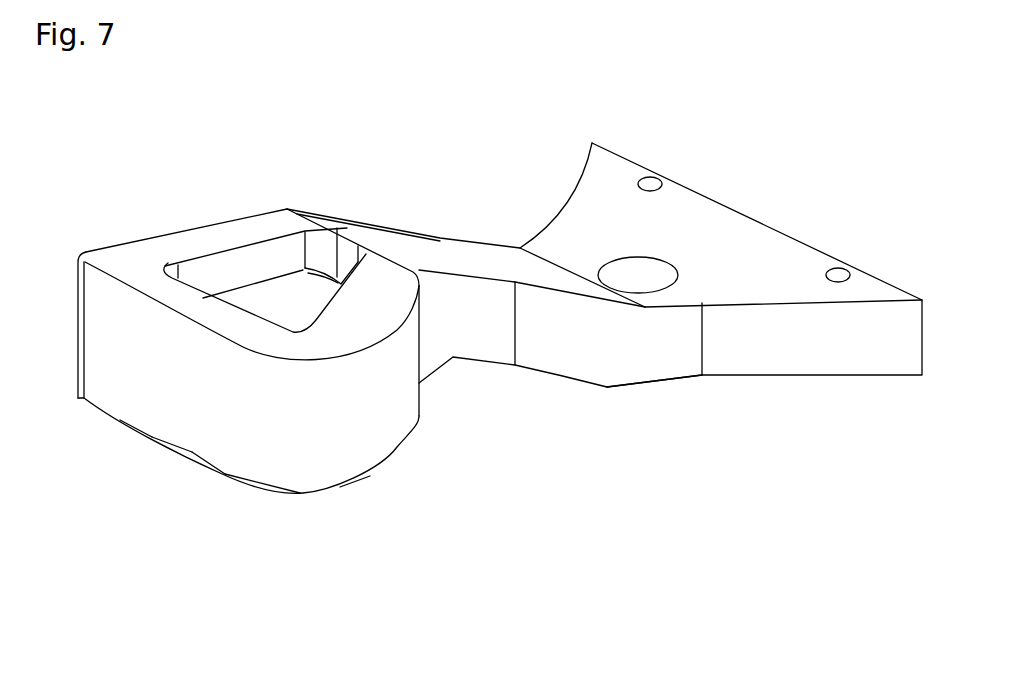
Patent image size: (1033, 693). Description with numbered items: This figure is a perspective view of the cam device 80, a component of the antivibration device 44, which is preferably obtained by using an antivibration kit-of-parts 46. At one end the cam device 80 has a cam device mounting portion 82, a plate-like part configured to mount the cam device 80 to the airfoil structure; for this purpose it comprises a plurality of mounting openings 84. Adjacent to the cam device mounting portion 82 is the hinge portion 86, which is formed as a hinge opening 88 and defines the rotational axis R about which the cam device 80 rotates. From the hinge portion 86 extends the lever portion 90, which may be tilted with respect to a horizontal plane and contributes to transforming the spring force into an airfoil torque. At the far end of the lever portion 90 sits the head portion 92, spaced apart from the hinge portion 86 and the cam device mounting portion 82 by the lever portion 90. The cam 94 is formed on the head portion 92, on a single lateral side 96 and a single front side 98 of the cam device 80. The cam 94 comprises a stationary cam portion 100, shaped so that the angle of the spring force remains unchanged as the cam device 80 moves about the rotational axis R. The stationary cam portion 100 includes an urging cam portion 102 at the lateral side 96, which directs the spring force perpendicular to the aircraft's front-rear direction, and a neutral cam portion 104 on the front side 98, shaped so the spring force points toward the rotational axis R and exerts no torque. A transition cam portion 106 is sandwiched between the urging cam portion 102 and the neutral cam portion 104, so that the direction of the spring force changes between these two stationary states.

The antivibration device 44 is at (178, 132).
The antivibration kit-of-parts 46 is at (298, 162).
The cam device 80 is at (604, 269).
The cam device mounting portion 82 is at (772, 210).
The mounting openings 84 is at (644, 187).
The hinge portion 86 is at (626, 354).
The hinge opening 88 is at (653, 278).
The lever portion 90 is at (477, 257).
The head portion 92 is at (243, 210).
The cam 94 is at (142, 402).
The lateral side 96 is at (418, 383).
The front side 98 is at (173, 415).
The stationary cam portion 100 is at (200, 437).
The urging cam portion 102 is at (355, 481).
The neutral cam portion 104 is at (227, 443).
The transition cam portion 106 is at (267, 440).
The rotational axis R is at (638, 273).